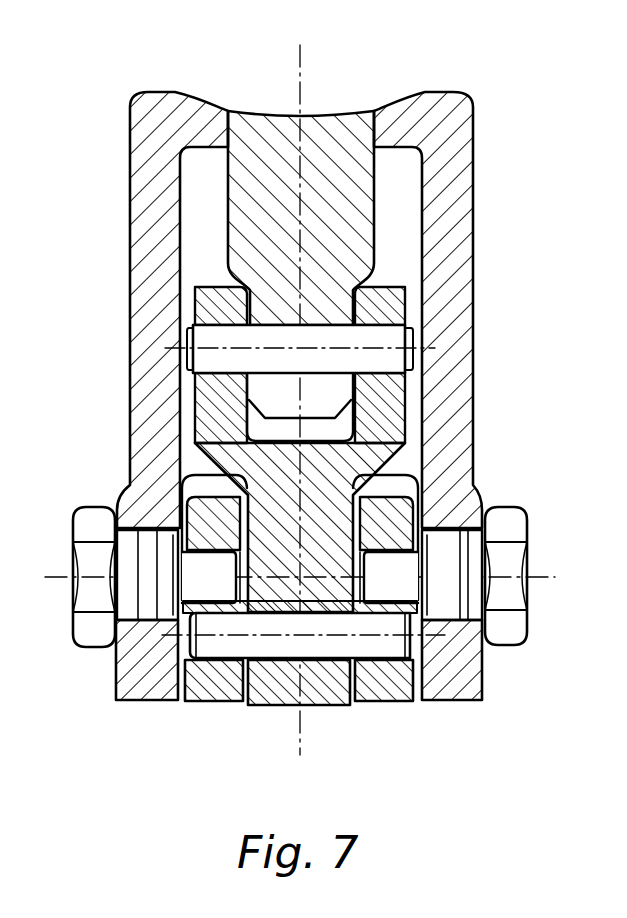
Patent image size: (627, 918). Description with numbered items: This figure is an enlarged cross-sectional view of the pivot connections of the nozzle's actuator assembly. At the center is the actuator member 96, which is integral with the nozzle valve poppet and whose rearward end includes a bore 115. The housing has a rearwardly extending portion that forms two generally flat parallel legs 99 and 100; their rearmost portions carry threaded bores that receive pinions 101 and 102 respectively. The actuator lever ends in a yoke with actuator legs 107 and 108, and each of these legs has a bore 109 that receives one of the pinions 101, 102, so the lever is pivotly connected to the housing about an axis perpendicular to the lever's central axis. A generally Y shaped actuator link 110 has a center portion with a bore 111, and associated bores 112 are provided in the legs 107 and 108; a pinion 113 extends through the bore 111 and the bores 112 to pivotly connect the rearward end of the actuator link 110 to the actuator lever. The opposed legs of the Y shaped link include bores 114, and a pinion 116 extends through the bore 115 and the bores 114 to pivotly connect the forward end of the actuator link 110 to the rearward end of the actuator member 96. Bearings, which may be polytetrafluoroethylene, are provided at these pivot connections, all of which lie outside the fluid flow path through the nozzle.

The actuator member 96 is at (333, 120).
The leg 99 is at (138, 272).
The leg 100 is at (457, 262).
The pinion 101 is at (87, 595).
The pinion 102 is at (515, 556).
The actuator leg 107 is at (203, 690).
The actuator leg 108 is at (360, 690).
The bore 109 is at (226, 544).
The actuator link 110 is at (420, 452).
The bore 111 is at (278, 663).
The bore 112 is at (218, 665).
The pinion 113 is at (382, 643).
The bore 114 is at (186, 392).
The bore 115 is at (327, 330).
The pinion 116 is at (390, 353).